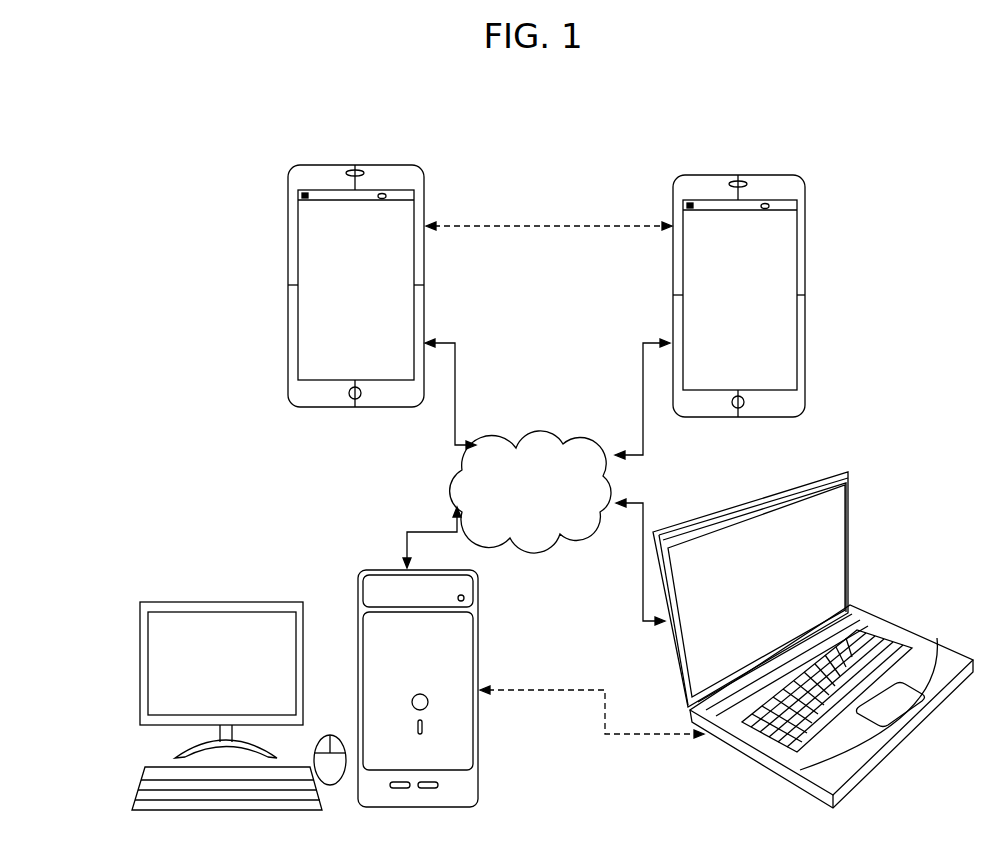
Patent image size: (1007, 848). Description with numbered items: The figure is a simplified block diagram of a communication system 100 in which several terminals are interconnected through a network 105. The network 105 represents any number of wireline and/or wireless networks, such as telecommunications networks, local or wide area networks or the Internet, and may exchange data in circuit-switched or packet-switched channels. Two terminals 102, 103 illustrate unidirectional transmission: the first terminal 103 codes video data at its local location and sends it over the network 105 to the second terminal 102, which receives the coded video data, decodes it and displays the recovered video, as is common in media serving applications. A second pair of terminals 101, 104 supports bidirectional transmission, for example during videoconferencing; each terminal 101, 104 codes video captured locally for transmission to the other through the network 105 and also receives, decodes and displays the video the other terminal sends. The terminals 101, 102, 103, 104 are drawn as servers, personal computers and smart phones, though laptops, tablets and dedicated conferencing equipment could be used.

The communication system 100 is at (158, 142).
The terminal 101 is at (288, 272).
The second terminal 102 is at (481, 778).
The first terminal 103 is at (790, 640).
The terminal 104 is at (707, 296).
The network 105 is at (541, 432).